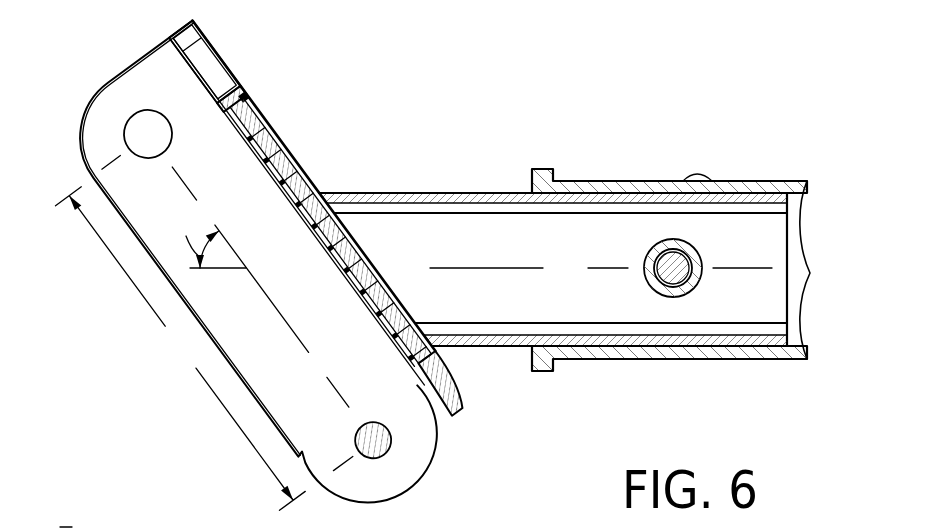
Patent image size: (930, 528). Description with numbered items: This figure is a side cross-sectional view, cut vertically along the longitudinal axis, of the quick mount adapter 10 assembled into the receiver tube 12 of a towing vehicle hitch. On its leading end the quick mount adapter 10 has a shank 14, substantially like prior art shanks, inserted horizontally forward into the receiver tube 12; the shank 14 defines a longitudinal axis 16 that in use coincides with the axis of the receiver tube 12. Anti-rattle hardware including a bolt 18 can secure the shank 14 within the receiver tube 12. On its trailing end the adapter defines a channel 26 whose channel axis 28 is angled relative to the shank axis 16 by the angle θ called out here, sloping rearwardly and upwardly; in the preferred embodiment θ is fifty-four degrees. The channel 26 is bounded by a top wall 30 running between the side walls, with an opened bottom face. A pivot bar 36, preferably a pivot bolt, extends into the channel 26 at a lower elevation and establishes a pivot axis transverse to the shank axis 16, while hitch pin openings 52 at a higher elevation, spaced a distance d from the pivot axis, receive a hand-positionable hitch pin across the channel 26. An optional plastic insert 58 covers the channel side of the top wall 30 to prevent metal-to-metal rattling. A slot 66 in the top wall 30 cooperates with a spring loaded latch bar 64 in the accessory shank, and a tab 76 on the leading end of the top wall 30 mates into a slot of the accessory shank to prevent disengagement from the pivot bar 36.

The quick mount adapter 10 is at (423, 78).
The receiver tube 12 is at (625, 185).
The shank 14 is at (440, 200).
The longitudinal axis 16 is at (478, 267).
The bolt 18 is at (673, 263).
The channel 26 is at (315, 285).
The channel axis 28 is at (338, 386).
The top wall 30 is at (282, 166).
The pivot bar 36 is at (376, 443).
The hitch pin openings 52 is at (140, 135).
The insert 58 is at (250, 103).
The spring loaded latch bar 64 is at (138, 527).
The slot 66 is at (213, 73).
The tab 76 is at (450, 398).